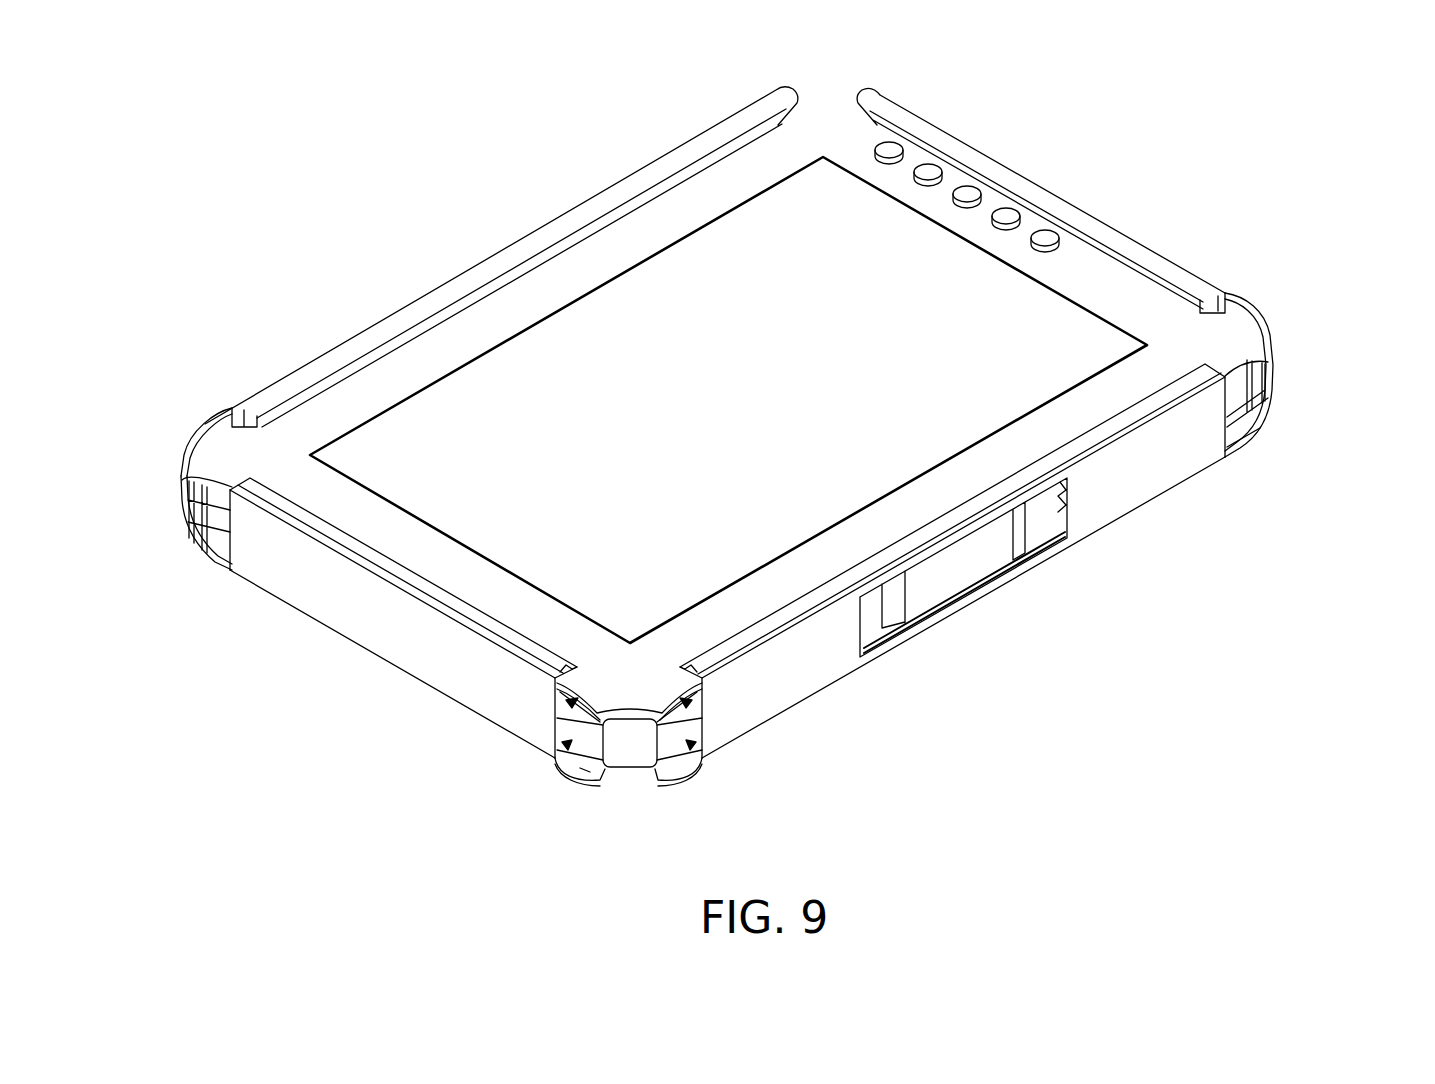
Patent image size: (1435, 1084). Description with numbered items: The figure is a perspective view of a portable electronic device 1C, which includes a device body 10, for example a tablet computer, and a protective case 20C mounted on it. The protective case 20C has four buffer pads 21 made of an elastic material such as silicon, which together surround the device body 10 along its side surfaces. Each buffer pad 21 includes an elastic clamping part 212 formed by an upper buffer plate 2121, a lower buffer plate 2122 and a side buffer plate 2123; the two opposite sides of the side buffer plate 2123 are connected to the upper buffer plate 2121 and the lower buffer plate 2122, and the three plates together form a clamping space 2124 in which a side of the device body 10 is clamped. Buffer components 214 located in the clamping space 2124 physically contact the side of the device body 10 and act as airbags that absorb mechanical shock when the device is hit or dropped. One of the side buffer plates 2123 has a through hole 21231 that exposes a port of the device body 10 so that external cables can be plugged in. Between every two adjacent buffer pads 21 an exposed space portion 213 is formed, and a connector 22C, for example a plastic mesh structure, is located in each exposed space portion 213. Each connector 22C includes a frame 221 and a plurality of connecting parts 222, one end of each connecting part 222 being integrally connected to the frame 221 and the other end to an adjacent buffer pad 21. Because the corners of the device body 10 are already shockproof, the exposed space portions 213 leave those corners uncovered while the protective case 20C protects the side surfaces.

The portable electronic device 1C is at (138, 105).
The device body 10 is at (827, 128).
The protective case 20C is at (1370, 355).
The buffer pad 21 is at (226, 582).
The elastic clamping part 212 is at (330, 670).
The upper buffer plate 2121 is at (489, 630).
The lower buffer plate 2122 is at (585, 733).
The side buffer plate 2123 is at (727, 567).
The clamping space 2124 is at (608, 775).
The exposed space portion 213 is at (1235, 292).
The buffer component 214 is at (585, 772).
The through hole 21231 is at (1048, 553).
The connector 22C is at (1283, 360).
The frame 221 is at (186, 493).
The connecting part 222 is at (228, 418).